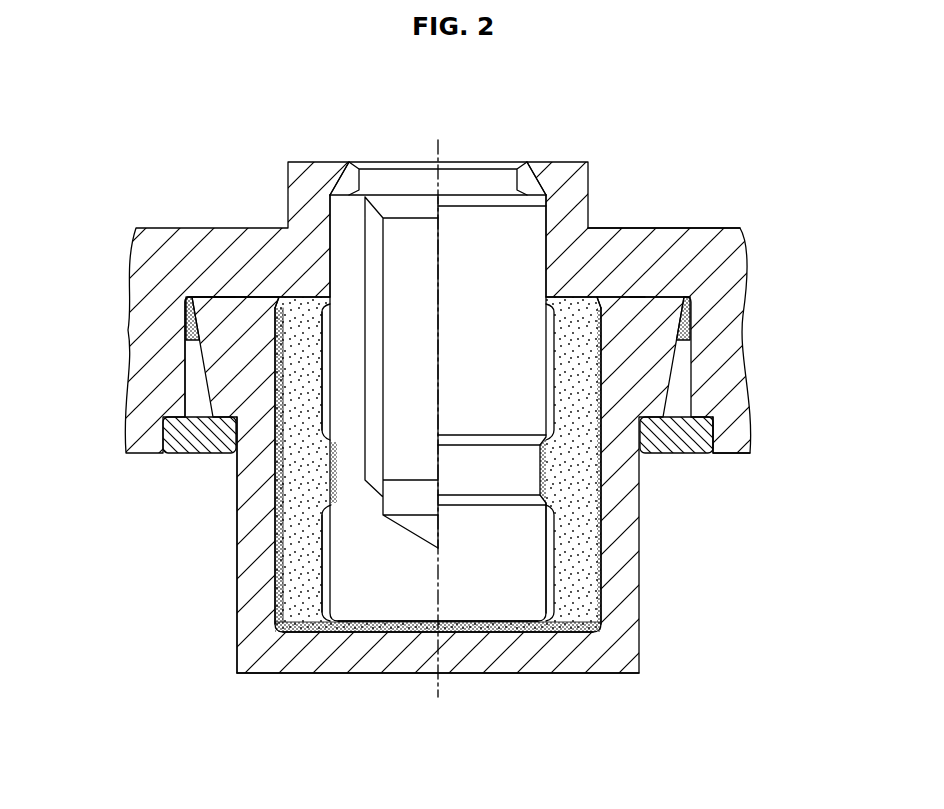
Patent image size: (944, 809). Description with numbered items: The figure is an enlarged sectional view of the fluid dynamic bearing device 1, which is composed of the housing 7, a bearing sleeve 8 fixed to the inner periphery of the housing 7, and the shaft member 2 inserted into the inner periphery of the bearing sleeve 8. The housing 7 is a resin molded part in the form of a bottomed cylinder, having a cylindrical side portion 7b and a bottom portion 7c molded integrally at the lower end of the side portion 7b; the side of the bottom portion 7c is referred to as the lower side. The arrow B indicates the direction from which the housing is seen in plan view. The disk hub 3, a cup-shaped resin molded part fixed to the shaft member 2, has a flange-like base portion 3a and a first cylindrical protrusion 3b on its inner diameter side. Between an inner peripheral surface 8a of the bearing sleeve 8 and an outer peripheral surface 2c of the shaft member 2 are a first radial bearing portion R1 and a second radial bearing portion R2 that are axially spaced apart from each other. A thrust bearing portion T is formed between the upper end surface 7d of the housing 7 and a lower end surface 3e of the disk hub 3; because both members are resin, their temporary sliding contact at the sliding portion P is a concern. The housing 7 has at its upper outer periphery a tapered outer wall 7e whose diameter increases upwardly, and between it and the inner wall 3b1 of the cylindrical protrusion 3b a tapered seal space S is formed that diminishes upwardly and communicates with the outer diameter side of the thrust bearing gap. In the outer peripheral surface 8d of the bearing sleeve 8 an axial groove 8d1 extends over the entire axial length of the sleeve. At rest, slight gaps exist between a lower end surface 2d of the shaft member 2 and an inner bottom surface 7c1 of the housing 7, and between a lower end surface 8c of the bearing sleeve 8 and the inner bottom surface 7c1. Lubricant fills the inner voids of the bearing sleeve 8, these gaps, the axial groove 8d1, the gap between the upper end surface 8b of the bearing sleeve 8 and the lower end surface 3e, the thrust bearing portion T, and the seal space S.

The fluid dynamic bearing device 1 is at (694, 172).
The shaft member 2 is at (547, 216).
The outer peripheral surface 2c is at (548, 567).
The lower end surface 2d is at (500, 617).
The disk hub 3 is at (155, 228).
The base portion 3a is at (687, 237).
The first cylindrical protrusion 3b is at (740, 405).
The inner wall 3b1 is at (680, 378).
The lower end surface 3e is at (238, 305).
The housing 7 is at (247, 467).
The side portion 7b is at (255, 505).
The bottom portion 7c is at (308, 665).
The inner bottom surface 7c1 is at (400, 612).
The upper end surface 7d is at (240, 318).
The tapered outer wall 7e is at (675, 360).
The bearing sleeve 8 is at (583, 344).
The inner peripheral surface 8a is at (533, 410).
The upper end surface 8b is at (584, 298).
The lower end surface 8c is at (570, 600).
The outer peripheral surface 8d is at (602, 528).
The axial groove 8d1 is at (280, 533).
The arrow B is at (243, 136).
The thrust bearing portion T is at (222, 298).
The sliding portion P is at (638, 297).
The seal space S is at (692, 312).
The first radial bearing portion R1 is at (311, 370).
The second radial bearing portion R2 is at (312, 562).